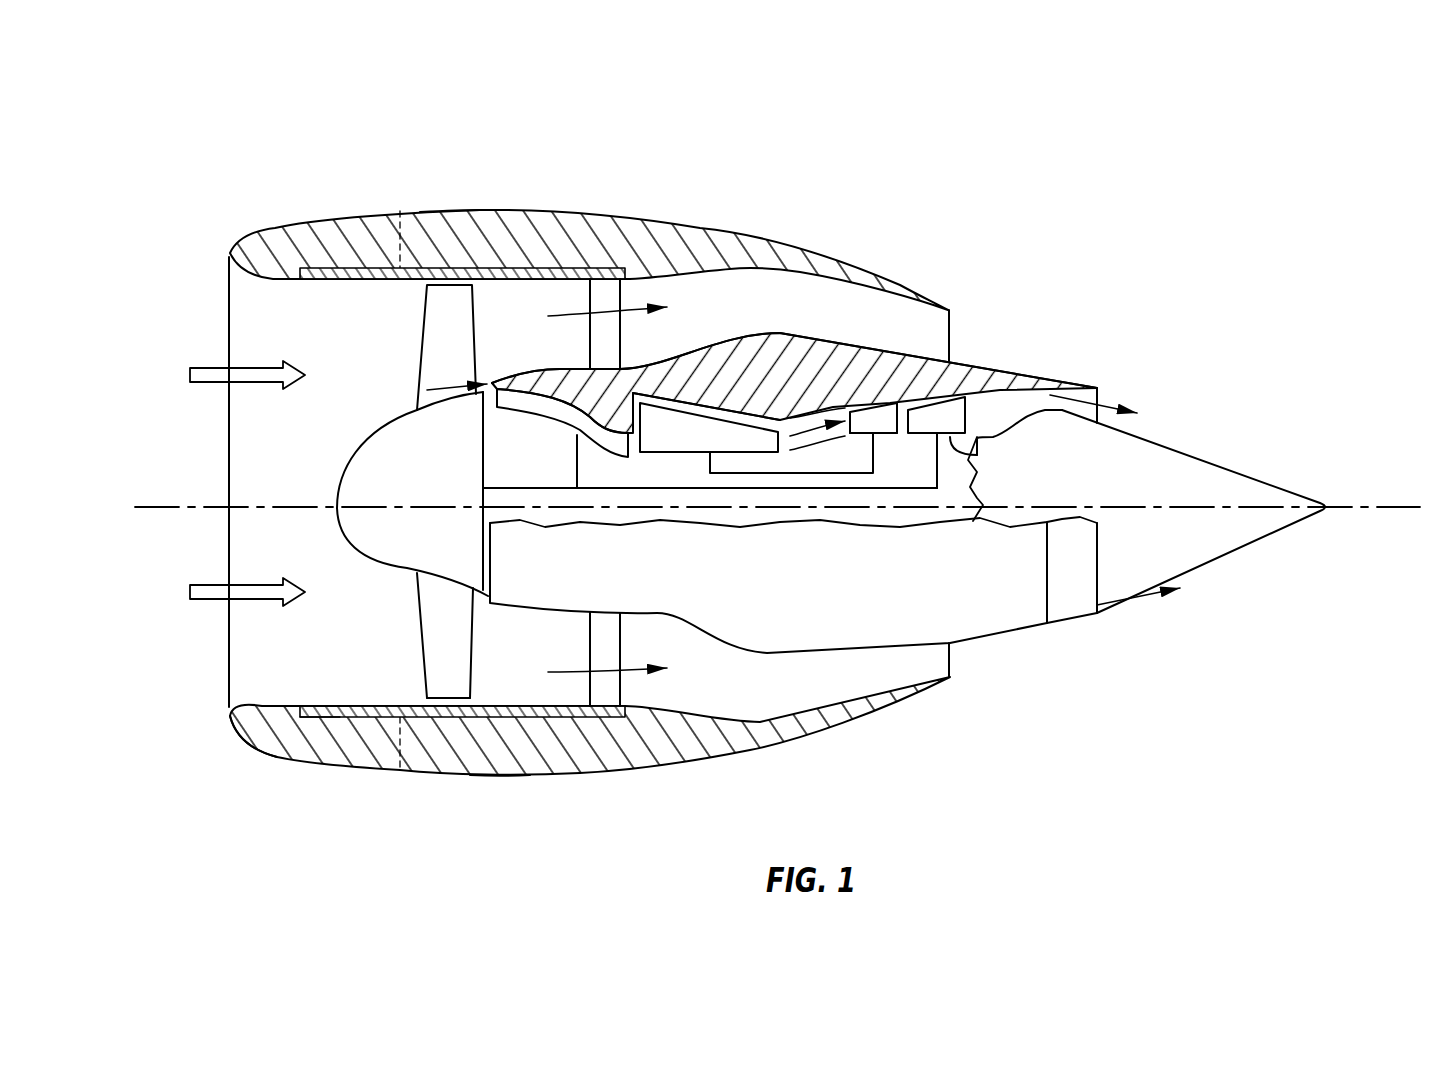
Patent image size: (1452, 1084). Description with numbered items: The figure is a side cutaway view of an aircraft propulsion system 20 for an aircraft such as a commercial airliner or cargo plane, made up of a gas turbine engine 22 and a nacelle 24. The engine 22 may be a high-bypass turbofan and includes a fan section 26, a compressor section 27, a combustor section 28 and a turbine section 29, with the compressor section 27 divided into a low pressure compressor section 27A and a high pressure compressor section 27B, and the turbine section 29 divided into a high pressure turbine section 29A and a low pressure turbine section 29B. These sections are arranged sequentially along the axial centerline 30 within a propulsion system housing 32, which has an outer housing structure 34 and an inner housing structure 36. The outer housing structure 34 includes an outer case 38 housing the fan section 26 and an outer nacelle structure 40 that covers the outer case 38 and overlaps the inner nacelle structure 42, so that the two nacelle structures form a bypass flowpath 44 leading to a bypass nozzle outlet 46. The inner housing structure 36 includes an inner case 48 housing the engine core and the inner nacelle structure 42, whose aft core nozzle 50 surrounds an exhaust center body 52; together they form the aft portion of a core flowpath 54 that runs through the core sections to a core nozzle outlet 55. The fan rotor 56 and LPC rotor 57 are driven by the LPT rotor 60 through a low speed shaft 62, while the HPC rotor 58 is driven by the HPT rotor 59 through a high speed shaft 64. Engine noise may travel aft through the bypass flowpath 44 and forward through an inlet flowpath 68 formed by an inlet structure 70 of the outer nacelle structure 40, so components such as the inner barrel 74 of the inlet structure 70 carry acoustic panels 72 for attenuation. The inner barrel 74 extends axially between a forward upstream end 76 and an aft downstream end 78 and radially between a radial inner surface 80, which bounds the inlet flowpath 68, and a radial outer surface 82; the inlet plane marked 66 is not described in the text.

The propulsion system 20 is at (783, 490).
The gas turbine engine 22 is at (328, 445).
The nacelle 24 is at (503, 210).
The fan section 26 is at (393, 680).
The compressor section 27 is at (770, 552).
The low pressure compressor section 27A is at (553, 372).
The high pressure compressor section 27B is at (710, 397).
The combustor section 28 is at (822, 457).
The turbine section 29 is at (962, 575).
The high pressure turbine section 29A is at (880, 385).
The low pressure turbine section 29B is at (947, 383).
The axial centerline 30 is at (1415, 508).
The propulsion system housing 32 is at (605, 770).
The outer housing structure 34 is at (503, 778).
The inner housing structure 36 is at (858, 662).
The outer case 38 is at (428, 268).
The outer nacelle structure 40 is at (460, 211).
The inner nacelle structure 42 is at (830, 340).
The bypass flowpath 44 is at (652, 348).
The bypass nozzle outlet 46 is at (953, 663).
The inner case 48 is at (777, 420).
The core nozzle 50 is at (1073, 615).
The exhaust center body 52 is at (1197, 565).
The core flowpath 54 is at (977, 420).
The core nozzle outlet 55 is at (1097, 395).
The fan rotor 56 is at (407, 567).
The LPC rotor 57 is at (528, 412).
The HPC rotor 58 is at (662, 455).
The HPT rotor 59 is at (883, 435).
The LPT rotor 60 is at (977, 453).
The low speed shaft 62 is at (902, 490).
The high speed shaft 64 is at (746, 473).
The inlet plane 66 is at (229, 312).
The inlet flowpath 68 is at (324, 348).
The inlet structure 70 is at (268, 766).
The acoustic panel 72 is at (346, 264).
The inner barrel 74 is at (343, 721).
The forward upstream end 76 is at (292, 706).
The aft downstream end 78 is at (417, 718).
The radial inner surface 80 is at (332, 706).
The radial outer surface 82 is at (325, 719).